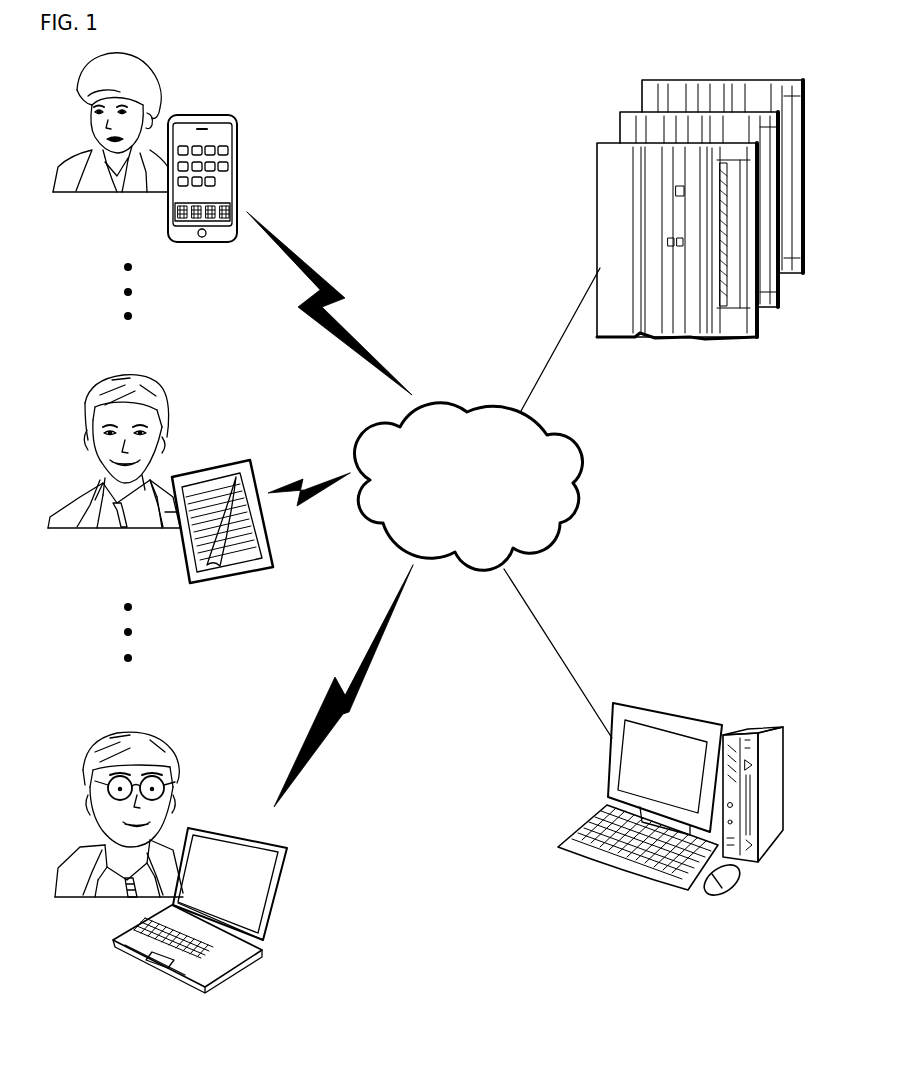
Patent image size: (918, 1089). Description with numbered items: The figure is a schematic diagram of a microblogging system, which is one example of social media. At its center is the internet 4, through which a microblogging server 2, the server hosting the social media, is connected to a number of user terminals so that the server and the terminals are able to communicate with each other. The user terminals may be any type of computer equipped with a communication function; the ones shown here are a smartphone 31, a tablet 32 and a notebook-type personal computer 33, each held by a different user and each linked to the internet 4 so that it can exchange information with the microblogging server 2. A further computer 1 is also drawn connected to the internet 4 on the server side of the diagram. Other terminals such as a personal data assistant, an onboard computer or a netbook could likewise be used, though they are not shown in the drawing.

The personal computer (client terminal) 1 is at (758, 727).
The microblogging server 2 is at (597, 180).
The internet 4 is at (470, 495).
The smartphone 31 is at (237, 147).
The tablet 32 is at (227, 460).
The personal computer 33 is at (285, 877).